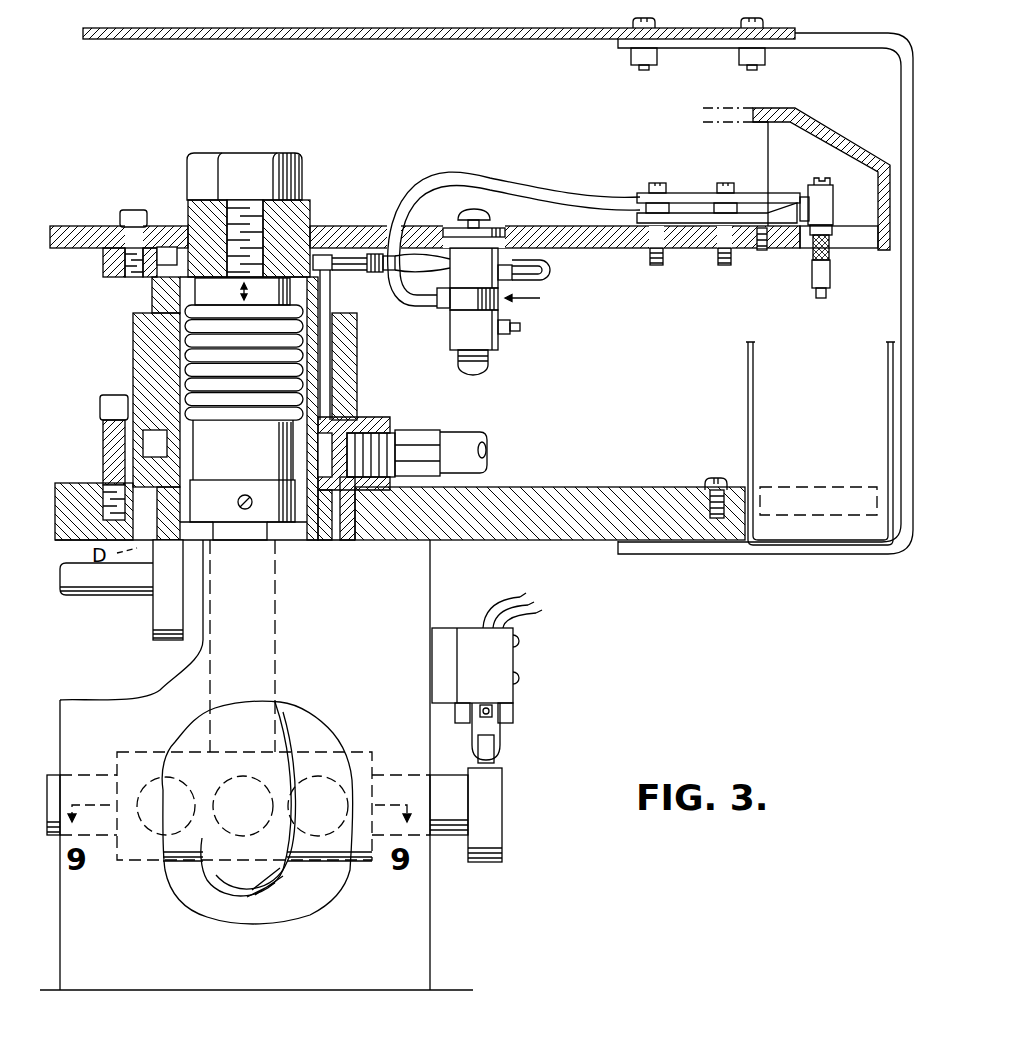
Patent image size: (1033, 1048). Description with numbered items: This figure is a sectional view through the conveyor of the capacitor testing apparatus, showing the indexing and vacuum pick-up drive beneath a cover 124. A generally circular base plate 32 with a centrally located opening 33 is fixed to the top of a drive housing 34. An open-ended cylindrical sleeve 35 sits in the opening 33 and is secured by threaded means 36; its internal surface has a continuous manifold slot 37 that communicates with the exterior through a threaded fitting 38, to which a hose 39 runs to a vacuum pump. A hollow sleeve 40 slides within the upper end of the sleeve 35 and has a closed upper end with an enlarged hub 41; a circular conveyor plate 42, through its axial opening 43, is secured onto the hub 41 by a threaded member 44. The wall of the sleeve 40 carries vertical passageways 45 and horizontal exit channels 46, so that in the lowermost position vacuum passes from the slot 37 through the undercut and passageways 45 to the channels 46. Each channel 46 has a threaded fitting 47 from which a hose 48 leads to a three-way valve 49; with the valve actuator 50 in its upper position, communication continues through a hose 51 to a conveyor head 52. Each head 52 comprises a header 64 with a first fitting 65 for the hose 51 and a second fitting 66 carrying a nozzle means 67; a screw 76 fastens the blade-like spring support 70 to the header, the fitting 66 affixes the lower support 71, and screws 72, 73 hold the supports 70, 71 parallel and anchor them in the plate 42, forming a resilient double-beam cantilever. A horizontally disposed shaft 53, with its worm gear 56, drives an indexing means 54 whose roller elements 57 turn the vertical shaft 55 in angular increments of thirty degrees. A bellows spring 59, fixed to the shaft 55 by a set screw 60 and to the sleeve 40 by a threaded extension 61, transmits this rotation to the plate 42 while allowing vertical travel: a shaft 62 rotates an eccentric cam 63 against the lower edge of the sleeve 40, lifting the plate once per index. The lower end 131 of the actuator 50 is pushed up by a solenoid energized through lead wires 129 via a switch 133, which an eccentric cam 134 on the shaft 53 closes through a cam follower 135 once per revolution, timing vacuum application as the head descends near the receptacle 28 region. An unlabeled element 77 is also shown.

The cover 124 is at (550, 40).
The threaded extension 61 is at (240, 215).
The threaded member 44 is at (132, 210).
The axial opening 43 is at (196, 228).
The horizontal exit channel 46 is at (345, 258).
The threaded fitting 47 is at (373, 254).
The valve actuator 50 is at (462, 214).
The hose 51 is at (492, 186).
The screw 72 is at (656, 183).
The blade-like spring support 70 is at (677, 193).
The screw 73 is at (727, 183).
The conveyor head 52 is at (798, 182).
The screw 76 is at (835, 168).
The header 64 is at (833, 200).
The second fitting 66 is at (832, 230).
The nozzle means 67 is at (831, 273).
The first fitting 65 is at (805, 221).
The screw 77 is at (758, 250).
The conveyor plate 42 is at (638, 248).
The blade-like spring support 71 is at (690, 223).
The enlarged hub 41 is at (110, 270).
The hollow sleeve 40 is at (163, 290).
The vertical passageway 45 is at (331, 297).
The hose 48 is at (430, 263).
The three-way valve 49 is at (536, 299).
The cylindrical sleeve 35 is at (357, 362).
The manifold slot 37 is at (340, 437).
The threaded fitting 38 is at (373, 437).
The lower end of valve actuator 131 is at (490, 366).
The receptacle 28 is at (748, 366).
The threaded means 36 is at (113, 404).
The hose 39 is at (470, 452).
The bellows spring 59 is at (232, 405).
The set screw 60 is at (247, 509).
The centrally located opening 33 is at (357, 541).
The drive housing 34 is at (432, 585).
The lead wires 129 is at (520, 600).
The base plate 32 is at (603, 541).
The shaft 62 is at (103, 586).
The eccentric cam 63 is at (160, 622).
The vertical shaft 55 is at (283, 635).
The switch 133 is at (517, 665).
The roller element 57 is at (233, 780).
The cam follower 135 is at (497, 748).
The eccentric cam 134 is at (502, 804).
The horizontal shaft 53 is at (440, 820).
The indexing means 54 is at (190, 900).
The worm gear 56 is at (270, 892).